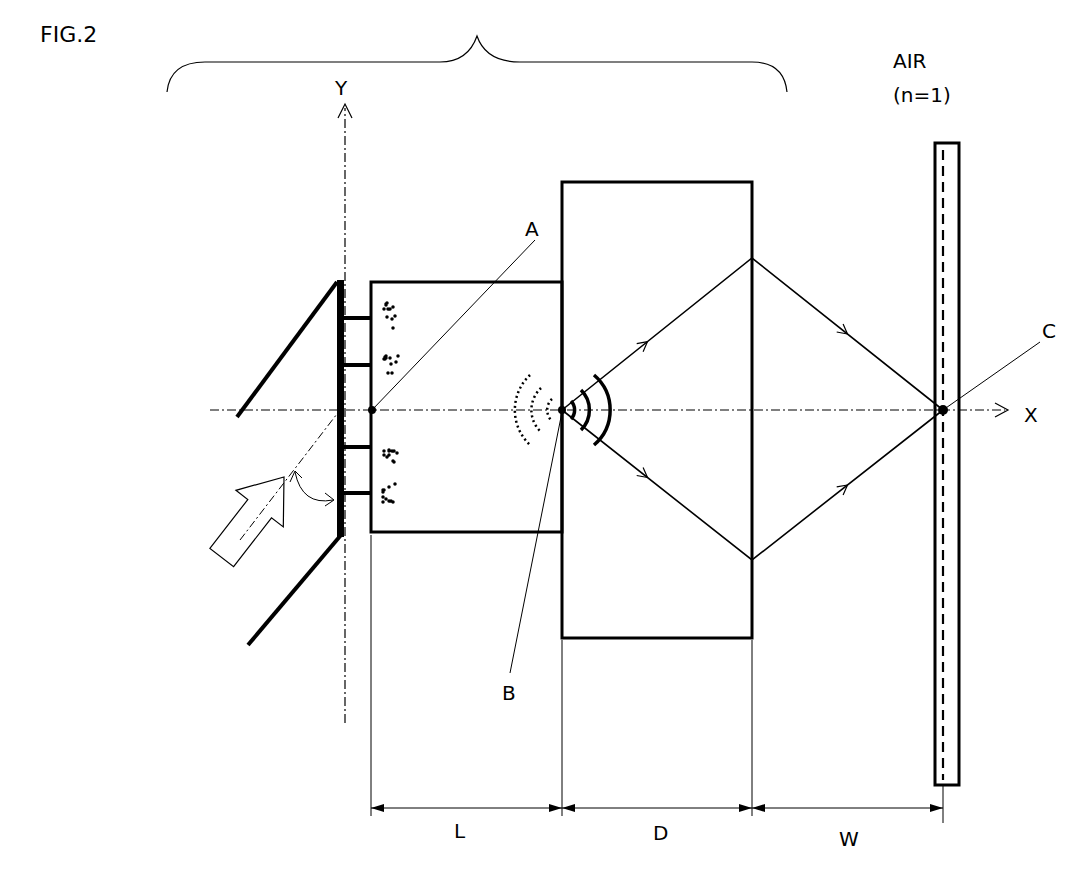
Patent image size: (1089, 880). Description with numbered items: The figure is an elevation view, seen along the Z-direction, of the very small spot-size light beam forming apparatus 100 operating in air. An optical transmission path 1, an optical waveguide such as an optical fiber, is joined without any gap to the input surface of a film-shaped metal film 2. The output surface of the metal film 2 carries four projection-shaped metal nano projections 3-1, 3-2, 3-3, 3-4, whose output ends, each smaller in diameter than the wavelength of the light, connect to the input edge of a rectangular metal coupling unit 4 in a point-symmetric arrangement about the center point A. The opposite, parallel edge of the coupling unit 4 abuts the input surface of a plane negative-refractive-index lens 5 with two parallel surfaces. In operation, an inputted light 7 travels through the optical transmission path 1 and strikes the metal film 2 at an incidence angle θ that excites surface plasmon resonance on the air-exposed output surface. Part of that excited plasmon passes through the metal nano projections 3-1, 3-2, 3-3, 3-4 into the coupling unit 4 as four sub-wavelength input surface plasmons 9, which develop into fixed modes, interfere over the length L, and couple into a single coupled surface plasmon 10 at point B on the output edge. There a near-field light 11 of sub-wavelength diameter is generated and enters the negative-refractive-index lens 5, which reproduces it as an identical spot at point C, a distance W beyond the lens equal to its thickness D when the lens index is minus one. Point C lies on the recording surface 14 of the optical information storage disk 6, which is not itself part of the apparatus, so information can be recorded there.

The very small spot-size light beam forming apparatus 100 is at (477, 47).
The optical transmission path 1 is at (258, 372).
The metal film 2 is at (333, 295).
The metal nano projection 3-1 is at (352, 318).
The metal nano projection 3-2 is at (362, 365).
The metal nano projection 3-3 is at (362, 447).
The metal nano projection 3-4 is at (352, 493).
The coupling unit 4 is at (438, 279).
The negative-refractive-index lens 5 is at (572, 178).
The optical information storage disk 6 is at (961, 162).
The inputted light 7 is at (246, 522).
The input surface plasmon 9 is at (396, 522).
The coupled surface plasmon 10 is at (523, 443).
The near-field light 11 is at (587, 450).
The recording surface 14 is at (944, 545).